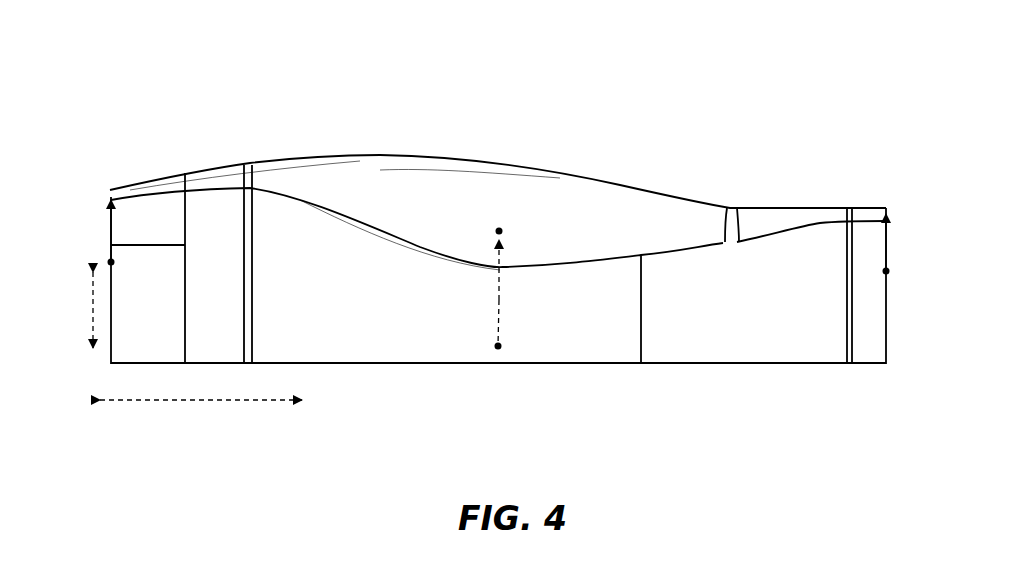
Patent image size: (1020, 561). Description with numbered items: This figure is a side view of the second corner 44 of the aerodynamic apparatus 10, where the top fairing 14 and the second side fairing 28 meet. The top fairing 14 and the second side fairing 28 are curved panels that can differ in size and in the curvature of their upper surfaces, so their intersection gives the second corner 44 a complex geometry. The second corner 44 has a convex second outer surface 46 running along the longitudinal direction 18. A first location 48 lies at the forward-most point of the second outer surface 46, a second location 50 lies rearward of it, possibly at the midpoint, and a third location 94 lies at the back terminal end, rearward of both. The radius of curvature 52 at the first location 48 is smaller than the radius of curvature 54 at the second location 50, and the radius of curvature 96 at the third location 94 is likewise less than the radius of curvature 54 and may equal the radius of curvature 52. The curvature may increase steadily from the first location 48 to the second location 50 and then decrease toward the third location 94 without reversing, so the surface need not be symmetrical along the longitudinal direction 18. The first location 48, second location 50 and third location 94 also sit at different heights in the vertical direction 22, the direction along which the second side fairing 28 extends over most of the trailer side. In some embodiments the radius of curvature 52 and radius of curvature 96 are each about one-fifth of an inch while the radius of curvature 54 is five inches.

The apparatus 10 is at (766, 44).
The top fairing 14 is at (202, 172).
The longitudinal direction 18 is at (193, 400).
The vertical direction 22 is at (93, 305).
The second side fairing 28 is at (728, 343).
The second corner 44 is at (700, 215).
The second outer surface 46 is at (320, 181).
The first location 48 is at (890, 220).
The second location 50 is at (501, 230).
The radius of curvature 52 is at (890, 247).
The radius of curvature 54 is at (498, 303).
The third location 94 is at (110, 197).
The radius of curvature 96 is at (109, 244).